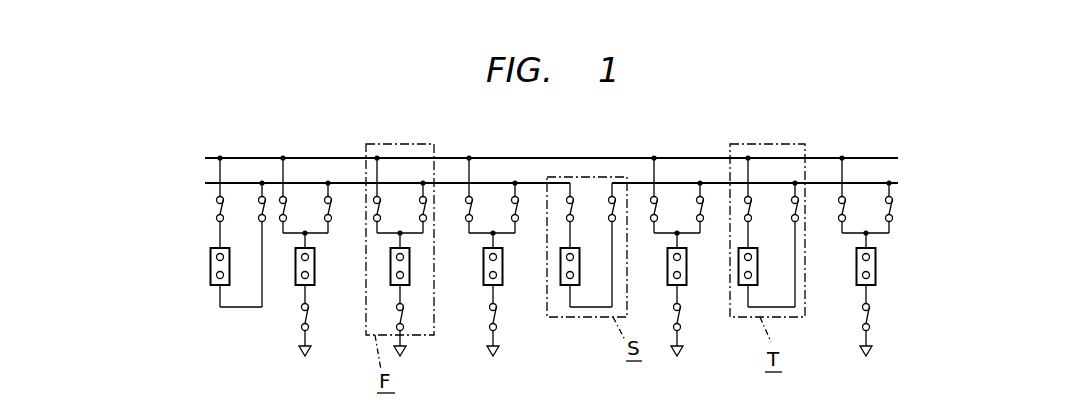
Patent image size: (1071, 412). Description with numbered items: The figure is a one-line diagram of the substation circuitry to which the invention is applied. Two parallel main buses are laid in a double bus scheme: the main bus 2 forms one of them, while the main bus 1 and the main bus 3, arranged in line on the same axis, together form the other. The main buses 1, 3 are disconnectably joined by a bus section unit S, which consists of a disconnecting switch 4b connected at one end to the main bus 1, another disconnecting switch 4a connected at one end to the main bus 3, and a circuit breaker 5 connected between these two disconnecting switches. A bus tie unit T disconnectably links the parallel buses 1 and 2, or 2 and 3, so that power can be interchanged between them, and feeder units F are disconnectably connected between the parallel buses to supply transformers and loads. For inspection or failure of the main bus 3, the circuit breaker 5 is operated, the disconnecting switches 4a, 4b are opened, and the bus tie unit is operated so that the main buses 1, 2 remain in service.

The main bus 1 is at (447, 186).
The main bus 2 is at (613, 158).
The main bus 3 is at (721, 186).
The disconnecting switch 4a is at (615, 204).
The disconnecting switch 4b is at (573, 204).
The circuit breaker 5 is at (558, 287).